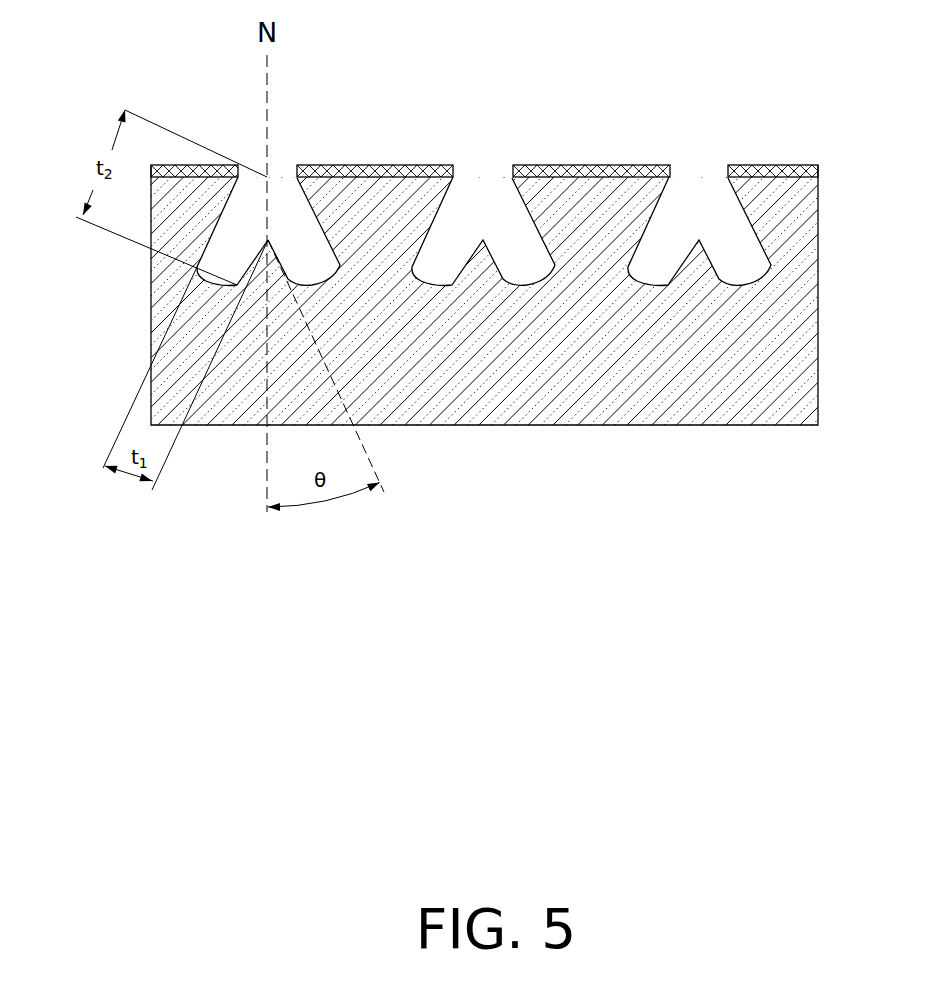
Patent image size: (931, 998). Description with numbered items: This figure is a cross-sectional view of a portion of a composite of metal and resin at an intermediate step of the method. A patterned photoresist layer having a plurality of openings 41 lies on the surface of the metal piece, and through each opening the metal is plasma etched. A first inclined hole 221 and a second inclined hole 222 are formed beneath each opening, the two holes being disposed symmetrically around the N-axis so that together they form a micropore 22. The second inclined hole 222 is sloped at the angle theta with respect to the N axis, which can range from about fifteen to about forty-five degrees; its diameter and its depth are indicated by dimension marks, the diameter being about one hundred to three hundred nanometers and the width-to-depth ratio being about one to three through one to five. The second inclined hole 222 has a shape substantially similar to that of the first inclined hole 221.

The micropore 22 is at (431, 253).
The first inclined hole 221 is at (228, 249).
The second inclined hole 222 is at (315, 255).
The opening 41 is at (693, 170).